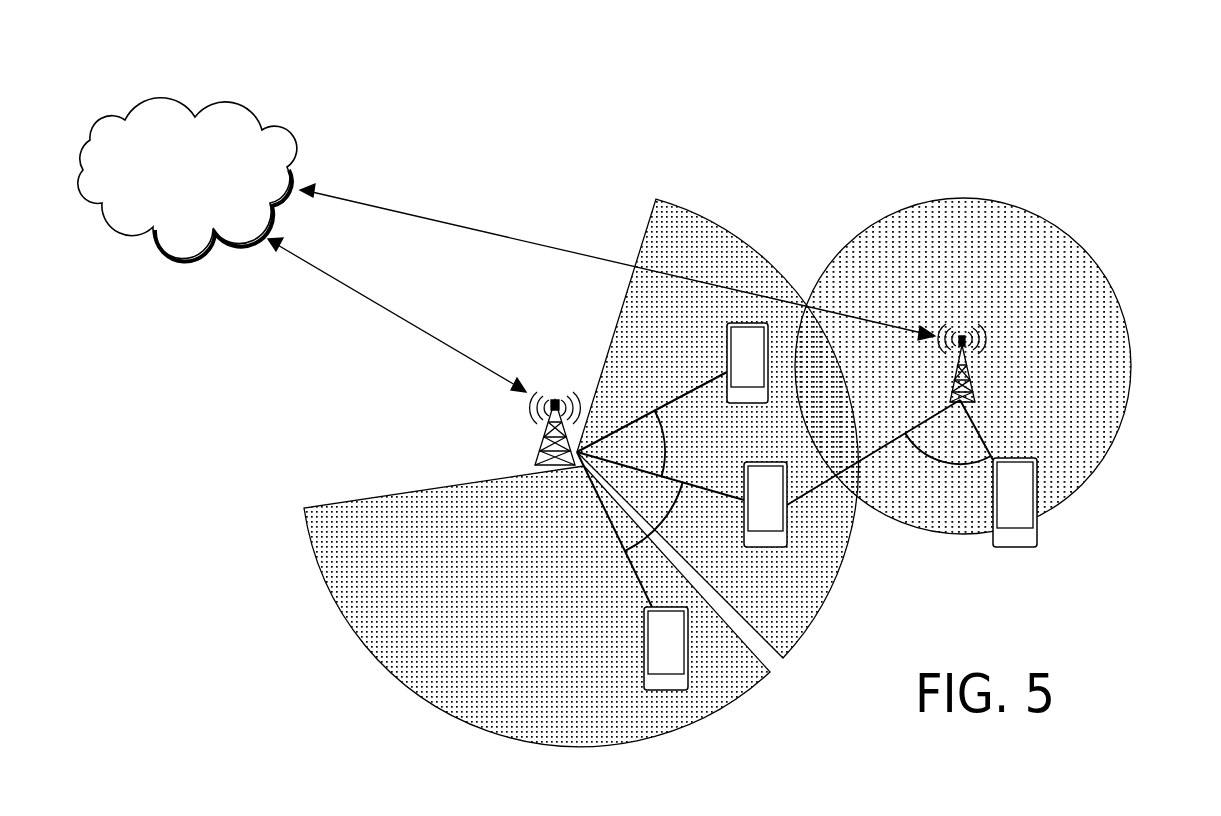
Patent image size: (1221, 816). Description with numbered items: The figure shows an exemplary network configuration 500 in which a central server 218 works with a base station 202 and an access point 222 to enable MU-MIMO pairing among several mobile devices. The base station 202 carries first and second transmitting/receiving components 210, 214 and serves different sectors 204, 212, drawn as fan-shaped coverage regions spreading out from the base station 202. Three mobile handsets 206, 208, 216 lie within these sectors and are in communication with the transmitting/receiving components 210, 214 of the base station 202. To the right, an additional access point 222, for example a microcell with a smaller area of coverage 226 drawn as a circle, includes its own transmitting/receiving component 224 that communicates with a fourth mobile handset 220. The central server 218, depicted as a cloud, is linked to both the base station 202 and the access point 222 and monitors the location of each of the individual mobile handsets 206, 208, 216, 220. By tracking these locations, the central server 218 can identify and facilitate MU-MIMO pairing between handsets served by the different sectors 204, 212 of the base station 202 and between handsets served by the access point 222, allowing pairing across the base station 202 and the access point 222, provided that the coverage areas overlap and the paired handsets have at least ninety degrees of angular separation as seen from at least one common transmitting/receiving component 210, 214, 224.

The network configuration 500 is at (1072, 90).
The base station 202 is at (548, 456).
The sector 204 is at (712, 232).
The mobile handset 206 is at (727, 348).
The mobile handset 208 is at (860, 552).
The first transmitting/receiving component 210 is at (563, 397).
The sector 212 is at (373, 504).
The second transmitting/receiving component 214 is at (548, 397).
The mobile handset 216 is at (666, 693).
The central server 218 is at (115, 118).
The fourth mobile handset 220 is at (1038, 528).
The access point 222 is at (968, 398).
The transmitting/receiving component 224 is at (962, 334).
The area of coverage 226 is at (1108, 314).